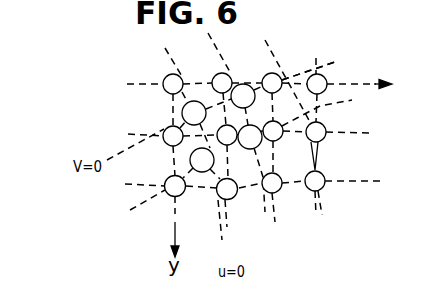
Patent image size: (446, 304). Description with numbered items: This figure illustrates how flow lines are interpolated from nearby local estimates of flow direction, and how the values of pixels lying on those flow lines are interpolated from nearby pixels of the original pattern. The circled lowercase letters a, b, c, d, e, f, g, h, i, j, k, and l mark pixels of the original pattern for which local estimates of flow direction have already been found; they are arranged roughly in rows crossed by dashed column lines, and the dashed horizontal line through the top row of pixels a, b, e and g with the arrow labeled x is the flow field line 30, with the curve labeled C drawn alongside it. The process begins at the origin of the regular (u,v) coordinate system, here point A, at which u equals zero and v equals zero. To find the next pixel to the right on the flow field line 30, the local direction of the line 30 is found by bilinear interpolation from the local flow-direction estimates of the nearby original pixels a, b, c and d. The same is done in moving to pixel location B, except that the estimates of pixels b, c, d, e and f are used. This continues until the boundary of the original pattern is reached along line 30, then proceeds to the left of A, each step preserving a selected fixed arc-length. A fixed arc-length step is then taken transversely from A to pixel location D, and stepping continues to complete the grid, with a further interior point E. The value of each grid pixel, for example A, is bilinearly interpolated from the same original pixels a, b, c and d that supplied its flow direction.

The flow field line 30 is at (365, 74).
The curve C is at (318, 63).
The pixel of the original pattern a is at (173, 84).
The pixel of the original pattern b is at (222, 83).
The pixel of the original pattern c is at (173, 136).
The pixel of the original pattern d is at (227, 135).
The pixel of the original pattern e is at (272, 83).
The pixel of the original pattern f is at (273, 131).
The pixel of the original pattern g is at (317, 84).
The pixel of the original pattern h is at (316, 132).
The pixel of the original pattern i is at (175, 186).
The pixel of the original pattern j is at (227, 189).
The nodal point k is at (272, 183).
The nodal point l is at (315, 181).
The starting point at the origin of the (u,v) system A is at (194, 113).
The pixel location on the flow line B is at (243, 96).
The pixel location transverse to A D is at (202, 160).
The cell center point E is at (250, 137).